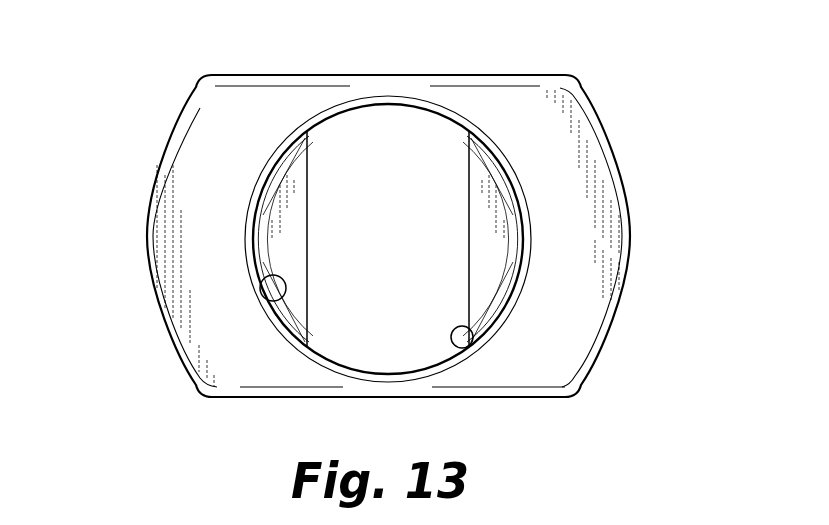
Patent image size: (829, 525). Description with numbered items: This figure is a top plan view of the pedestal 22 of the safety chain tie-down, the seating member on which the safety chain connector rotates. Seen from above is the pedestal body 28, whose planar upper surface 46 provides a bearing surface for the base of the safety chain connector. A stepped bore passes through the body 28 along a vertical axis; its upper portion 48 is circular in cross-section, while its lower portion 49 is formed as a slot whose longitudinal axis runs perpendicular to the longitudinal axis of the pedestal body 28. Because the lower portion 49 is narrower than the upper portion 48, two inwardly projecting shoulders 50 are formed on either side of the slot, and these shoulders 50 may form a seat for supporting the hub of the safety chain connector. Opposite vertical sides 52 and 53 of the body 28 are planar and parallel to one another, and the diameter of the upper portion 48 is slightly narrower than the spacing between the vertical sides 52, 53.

The pedestal 22 is at (170, 65).
The pedestal body 28 is at (585, 312).
The upper surface 46 is at (215, 141).
The upper portion of the bore 48 is at (288, 275).
The lower portion of the bore 49 is at (465, 355).
The shoulders 50 is at (487, 220).
The vertical side 52 is at (447, 75).
The vertical side 53 is at (508, 398).